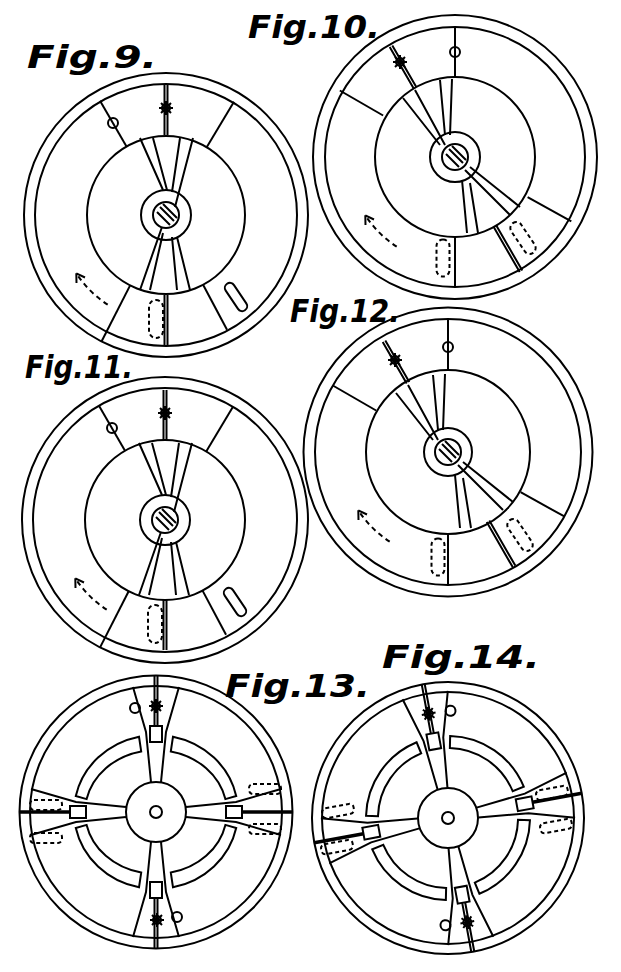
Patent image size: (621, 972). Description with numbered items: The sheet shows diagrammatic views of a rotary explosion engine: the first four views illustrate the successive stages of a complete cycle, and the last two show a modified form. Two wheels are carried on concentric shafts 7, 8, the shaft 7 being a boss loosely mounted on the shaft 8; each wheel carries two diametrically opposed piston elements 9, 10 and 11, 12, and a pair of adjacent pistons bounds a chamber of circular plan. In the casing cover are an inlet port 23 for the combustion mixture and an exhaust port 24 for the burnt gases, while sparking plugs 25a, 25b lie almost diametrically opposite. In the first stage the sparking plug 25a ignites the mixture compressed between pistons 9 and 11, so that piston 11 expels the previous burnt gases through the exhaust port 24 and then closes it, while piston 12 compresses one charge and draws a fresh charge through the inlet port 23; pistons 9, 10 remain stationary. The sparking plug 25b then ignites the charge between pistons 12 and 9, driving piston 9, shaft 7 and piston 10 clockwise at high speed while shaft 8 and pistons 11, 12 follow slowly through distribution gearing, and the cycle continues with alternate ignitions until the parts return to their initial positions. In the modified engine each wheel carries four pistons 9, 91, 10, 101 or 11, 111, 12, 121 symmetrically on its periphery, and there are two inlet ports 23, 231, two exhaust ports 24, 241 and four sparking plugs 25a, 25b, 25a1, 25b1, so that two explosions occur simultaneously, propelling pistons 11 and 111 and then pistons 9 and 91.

In FIG. 9, the shaft 7 is at (177, 200).
In FIG. 11, the shaft 7 is at (182, 512).
In FIG. 10, the shaft 7 is at (462, 135).
In FIG. 12, the shaft 7 is at (458, 427).
In FIG. 13, the shaft 7 is at (165, 807).
In FIG. 14, the shaft 7 is at (448, 804).
In FIG. 9, the shaft 8 is at (180, 217).
In FIG. 11, the shaft 8 is at (178, 522).
In FIG. 10, the shaft 8 is at (468, 147).
In FIG. 12, the shaft 8 is at (463, 443).
In FIG. 13, the shaft 8 is at (160, 809).
In FIG. 14, the shaft 8 is at (452, 792).
In FIG. 9, the piston element 9 is at (125, 137).
In FIG. 11, the piston element 9 is at (198, 603).
In FIG. 10, the piston element 9 is at (433, 40).
In FIG. 12, the piston element 9 is at (470, 563).
In FIG. 13, the piston element 9 is at (133, 690).
In FIG. 14, the piston element 9 is at (455, 705).
In FIG. 9, the piston element 10 is at (207, 320).
In FIG. 11, the piston element 10 is at (122, 404).
In FIG. 10, the piston element 10 is at (498, 263).
In FIG. 12, the piston element 10 is at (428, 333).
In FIG. 13, the piston element 10 is at (283, 797).
In FIG. 14, the piston element 10 is at (524, 812).
In FIG. 9, the piston element 11 is at (197, 132).
In FIG. 11, the piston element 11 is at (132, 603).
In FIG. 10, the piston element 11 is at (553, 223).
In FIG. 12, the piston element 11 is at (350, 376).
In FIG. 13, the piston element 11 is at (155, 679).
In FIG. 14, the piston element 11 is at (577, 767).
In FIG. 9, the piston element 12 is at (127, 293).
In FIG. 11, the piston element 12 is at (203, 438).
In FIG. 10, the piston element 12 is at (363, 88).
In FIG. 12, the piston element 12 is at (543, 527).
In FIG. 13, the piston element 12 is at (268, 863).
In FIG. 14, the piston element 12 is at (488, 932).
In FIG. 9, the inlet port 23 is at (143, 287).
In FIG. 11, the inlet port 23 is at (150, 634).
In FIG. 10, the inlet port 23 is at (440, 238).
In FIG. 12, the inlet port 23 is at (433, 580).
In FIG. 13, the inlet port 23 is at (260, 835).
In FIG. 14, the inlet port 23 is at (548, 832).
In FIG. 9, the exhaust port 24 is at (238, 283).
In FIG. 11, the exhaust port 24 is at (242, 593).
In FIG. 10, the exhaust port 24 is at (537, 265).
In FIG. 12, the exhaust port 24 is at (530, 565).
In FIG. 13, the exhaust port 24 is at (263, 784).
In FIG. 14, the exhaust port 24 is at (553, 788).
In FIG. 9, the sparking plug 25a is at (170, 100).
In FIG. 11, the sparking plug 25a is at (172, 418).
In FIG. 10, the sparking plug 25a is at (460, 55).
In FIG. 12, the sparking plug 25a is at (453, 350).
In FIG. 13, the sparking plug 25a is at (165, 712).
In FIG. 14, the sparking plug 25a is at (455, 714).
In FIG. 9, the sparking plug 25b is at (108, 121).
In FIG. 11, the sparking plug 25b is at (109, 433).
In FIG. 10, the sparking plug 25b is at (393, 63).
In FIG. 12, the sparking plug 25b is at (388, 358).
In FIG. 13, the sparking plug 25b is at (131, 710).
In FIG. 14, the sparking plug 25b is at (422, 720).
In FIG. 13, the piston 91 is at (175, 906).
In FIG. 14, the piston 91 is at (448, 937).
In FIG. 13, the piston 101 is at (47, 844).
In FIG. 14, the piston 101 is at (332, 822).
In FIG. 13, the piston 111 is at (147, 907).
In FIG. 14, the piston 111 is at (343, 863).
In FIG. 13, the piston 121 is at (48, 798).
In FIG. 14, the piston 121 is at (415, 702).
In FIG. 13, the inlet port 231 is at (108, 768).
In FIG. 14, the inlet port 231 is at (393, 780).
In FIG. 13, the exhaust port 241 is at (108, 856).
In FIG. 14, the exhaust port 241 is at (410, 873).
In FIG. 13, the sparking plug 25a1 is at (150, 925).
In FIG. 14, the sparking plug 25a1 is at (442, 924).
In FIG. 13, the sparking plug 25b1 is at (182, 920).
In FIG. 14, the sparking plug 25b1 is at (474, 926).